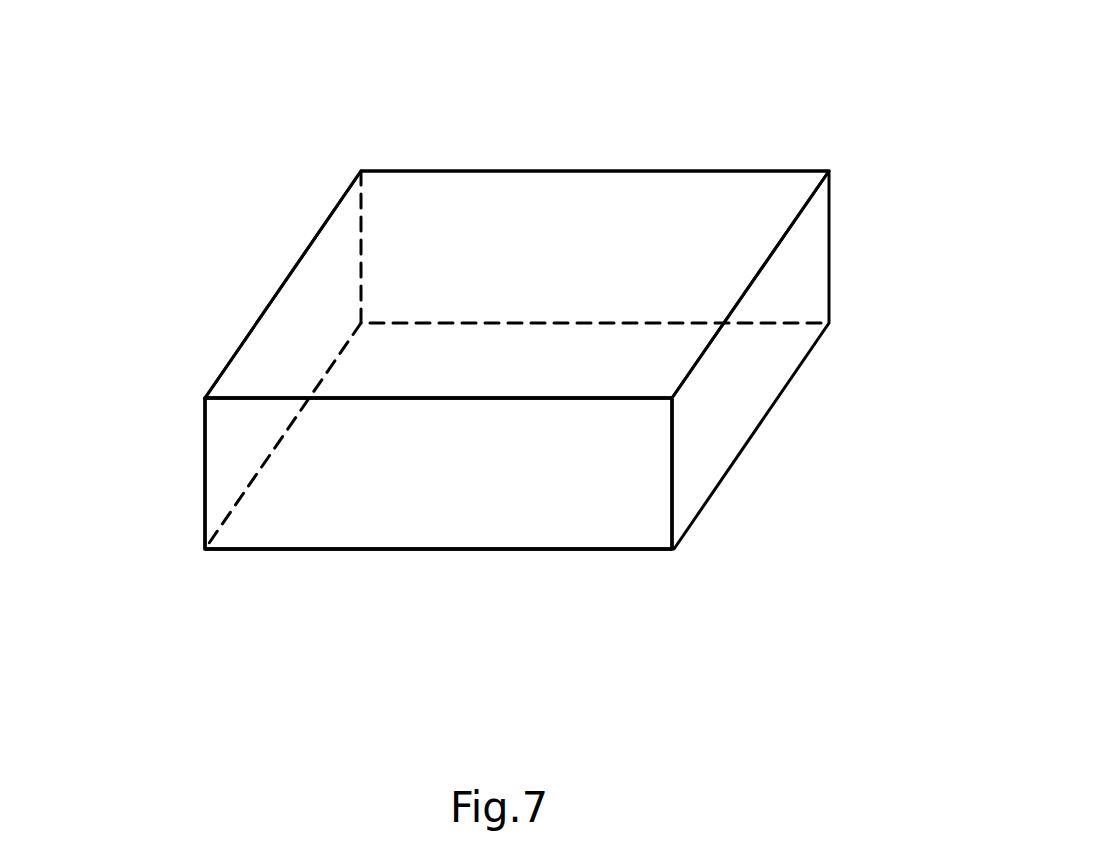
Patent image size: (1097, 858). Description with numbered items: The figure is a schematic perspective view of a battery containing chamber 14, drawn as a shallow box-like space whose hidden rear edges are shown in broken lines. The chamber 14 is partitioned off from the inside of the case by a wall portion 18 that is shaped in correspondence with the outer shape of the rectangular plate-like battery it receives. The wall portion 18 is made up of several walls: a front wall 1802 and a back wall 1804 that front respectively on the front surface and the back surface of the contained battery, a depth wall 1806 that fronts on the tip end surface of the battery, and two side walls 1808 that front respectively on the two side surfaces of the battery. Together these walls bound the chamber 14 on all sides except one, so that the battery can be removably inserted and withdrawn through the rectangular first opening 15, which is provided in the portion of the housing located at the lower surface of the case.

The wall portion 18 is at (411, 167).
The depth wall 1806 is at (742, 203).
The front wall 1802 is at (587, 397).
The side walls 1808 is at (203, 470).
The back wall 1804 is at (622, 552).
The battery containing chamber 14 is at (550, 510).
The first opening 15 is at (308, 530).